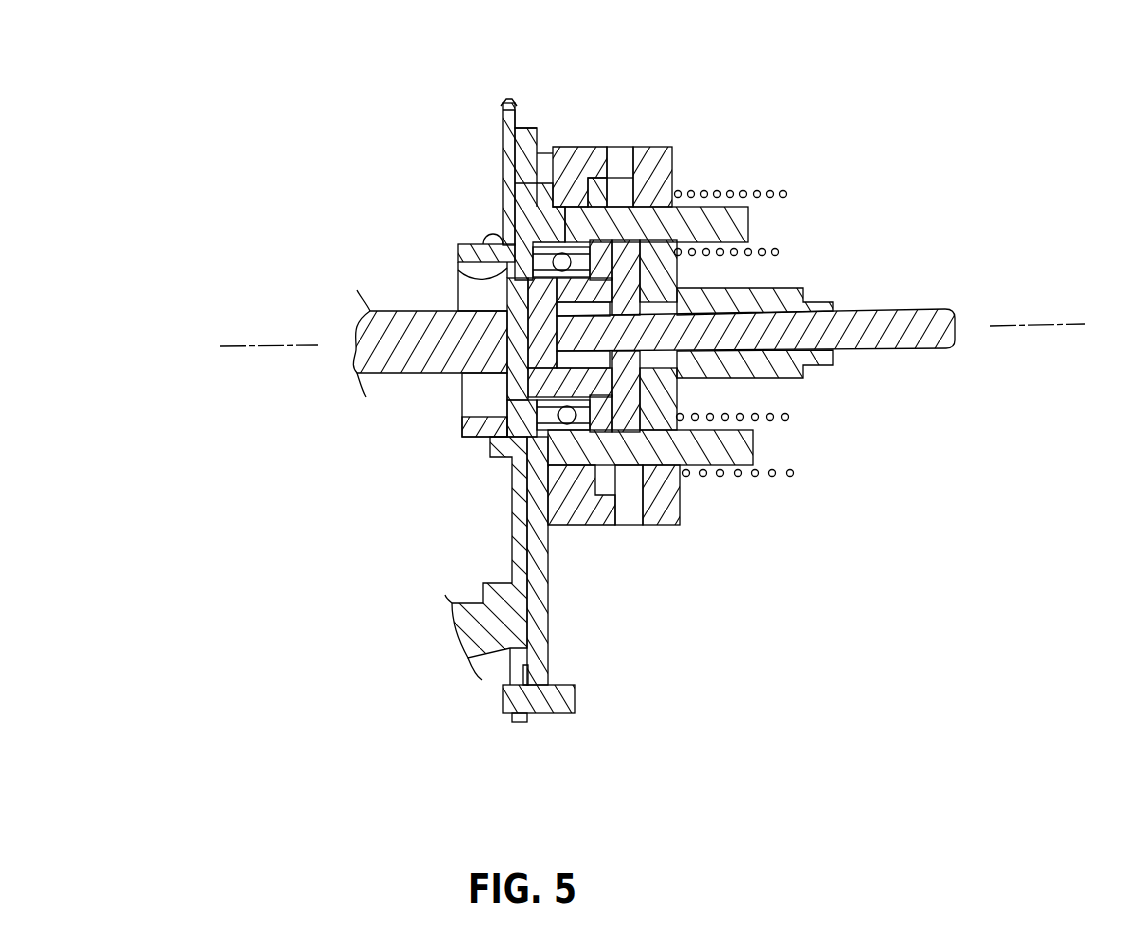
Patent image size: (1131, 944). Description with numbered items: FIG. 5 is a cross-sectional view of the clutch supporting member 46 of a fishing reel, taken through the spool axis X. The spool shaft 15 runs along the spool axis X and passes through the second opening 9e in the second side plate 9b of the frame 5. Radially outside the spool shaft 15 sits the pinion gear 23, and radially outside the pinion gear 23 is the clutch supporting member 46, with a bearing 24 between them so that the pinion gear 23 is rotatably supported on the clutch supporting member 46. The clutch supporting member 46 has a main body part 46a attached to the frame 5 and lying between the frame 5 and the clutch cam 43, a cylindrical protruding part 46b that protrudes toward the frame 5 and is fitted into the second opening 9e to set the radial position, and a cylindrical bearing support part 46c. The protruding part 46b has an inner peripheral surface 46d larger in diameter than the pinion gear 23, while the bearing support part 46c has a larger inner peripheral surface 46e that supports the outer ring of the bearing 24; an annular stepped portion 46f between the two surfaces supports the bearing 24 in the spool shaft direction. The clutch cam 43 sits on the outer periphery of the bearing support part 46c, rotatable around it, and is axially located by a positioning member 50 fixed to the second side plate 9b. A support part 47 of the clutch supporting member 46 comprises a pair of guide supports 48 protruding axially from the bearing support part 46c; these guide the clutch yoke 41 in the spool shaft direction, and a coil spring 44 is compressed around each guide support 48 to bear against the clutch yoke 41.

The frame 5 is at (512, 120).
The second side plate 9b is at (474, 212).
The second opening 9e is at (452, 266).
The spool shaft 15 is at (396, 381).
The pinion gear 23 is at (792, 388).
The bearing 24 is at (526, 267).
The clutch yoke 41 is at (650, 152).
The clutch cam 43 is at (578, 147).
The coil spring 44 is at (768, 184).
The clutch supporting member 46 is at (527, 124).
The main body part 46a is at (515, 197).
The protruding part 46b is at (478, 245).
The bearing support part 46c is at (515, 158).
The inner peripheral surface 46d is at (480, 397).
The inner peripheral surface 46e is at (463, 440).
The stepped portion 46f is at (565, 527).
The support part 47 is at (713, 207).
The guide supports 48 is at (661, 342).
The positioning member 50 is at (608, 478).
The spool axis X is at (650, 337).